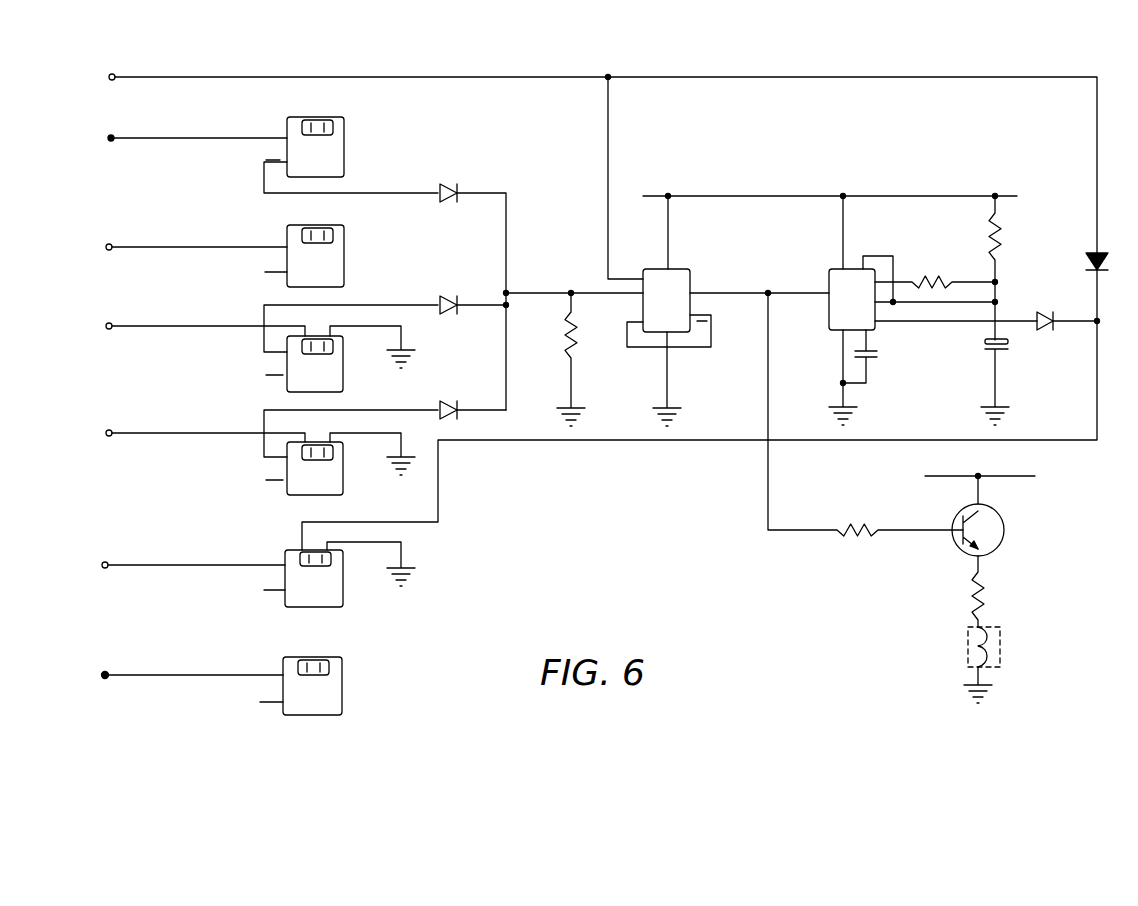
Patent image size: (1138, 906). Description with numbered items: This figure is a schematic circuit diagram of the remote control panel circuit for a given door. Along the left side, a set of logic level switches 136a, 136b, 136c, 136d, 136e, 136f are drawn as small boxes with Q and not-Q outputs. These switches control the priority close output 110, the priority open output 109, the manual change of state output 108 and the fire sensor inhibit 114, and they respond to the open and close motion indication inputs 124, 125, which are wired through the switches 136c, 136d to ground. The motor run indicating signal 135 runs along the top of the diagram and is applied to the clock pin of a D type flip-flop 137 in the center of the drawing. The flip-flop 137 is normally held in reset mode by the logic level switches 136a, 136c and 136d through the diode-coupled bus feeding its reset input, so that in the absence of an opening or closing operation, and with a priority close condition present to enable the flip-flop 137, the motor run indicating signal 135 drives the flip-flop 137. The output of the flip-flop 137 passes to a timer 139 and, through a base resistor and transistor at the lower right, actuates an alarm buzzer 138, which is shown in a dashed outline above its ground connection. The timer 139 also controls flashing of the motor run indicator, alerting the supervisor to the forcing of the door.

The motor run indicating signal 135 is at (586, 308).
The priority close output 110 is at (175, 139).
The priority open output 109 is at (175, 248).
The open motion indication input 124 is at (239, 341).
The close motion indication input 125 is at (239, 448).
The manual change of state output 108 is at (172, 566).
The fire sensor inhibit 114 is at (171, 676).
The logic level switch 136a is at (344, 152).
The logic level switch 136b is at (334, 265).
The logic level switch 136c is at (290, 366).
The logic level switch 136d is at (292, 470).
The logic level switch 136e is at (293, 580).
The logic level switch 136f is at (330, 694).
The D type flip-flop 137 is at (650, 278).
The timer 139 is at (838, 277).
The alarm buzzer 138 is at (1000, 632).